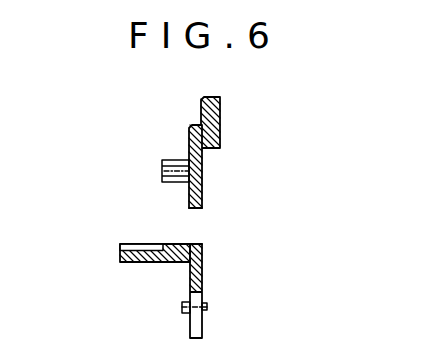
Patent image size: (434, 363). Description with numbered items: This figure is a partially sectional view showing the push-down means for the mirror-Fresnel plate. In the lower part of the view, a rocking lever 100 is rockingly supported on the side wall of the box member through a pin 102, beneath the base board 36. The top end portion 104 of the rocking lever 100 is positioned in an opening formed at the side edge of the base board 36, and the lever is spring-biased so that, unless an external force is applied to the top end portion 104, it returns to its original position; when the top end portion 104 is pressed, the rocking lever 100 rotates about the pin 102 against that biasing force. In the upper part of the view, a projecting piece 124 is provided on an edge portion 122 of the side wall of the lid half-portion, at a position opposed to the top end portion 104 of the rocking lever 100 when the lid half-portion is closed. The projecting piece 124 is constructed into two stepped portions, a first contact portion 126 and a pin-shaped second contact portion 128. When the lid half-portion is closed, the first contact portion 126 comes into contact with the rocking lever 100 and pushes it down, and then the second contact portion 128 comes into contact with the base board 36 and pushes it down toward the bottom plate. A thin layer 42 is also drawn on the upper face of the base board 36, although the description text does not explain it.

The edge portion 122 is at (222, 105).
The projecting piece 124 is at (208, 170).
The first contact portion 126 is at (194, 211).
The second contact portion 128 is at (162, 168).
The base board 36 is at (170, 263).
The sheet layer 42 is at (140, 244).
The rocking lever 100 is at (212, 283).
The pin 102 is at (207, 310).
The top end portion 104 is at (197, 243).